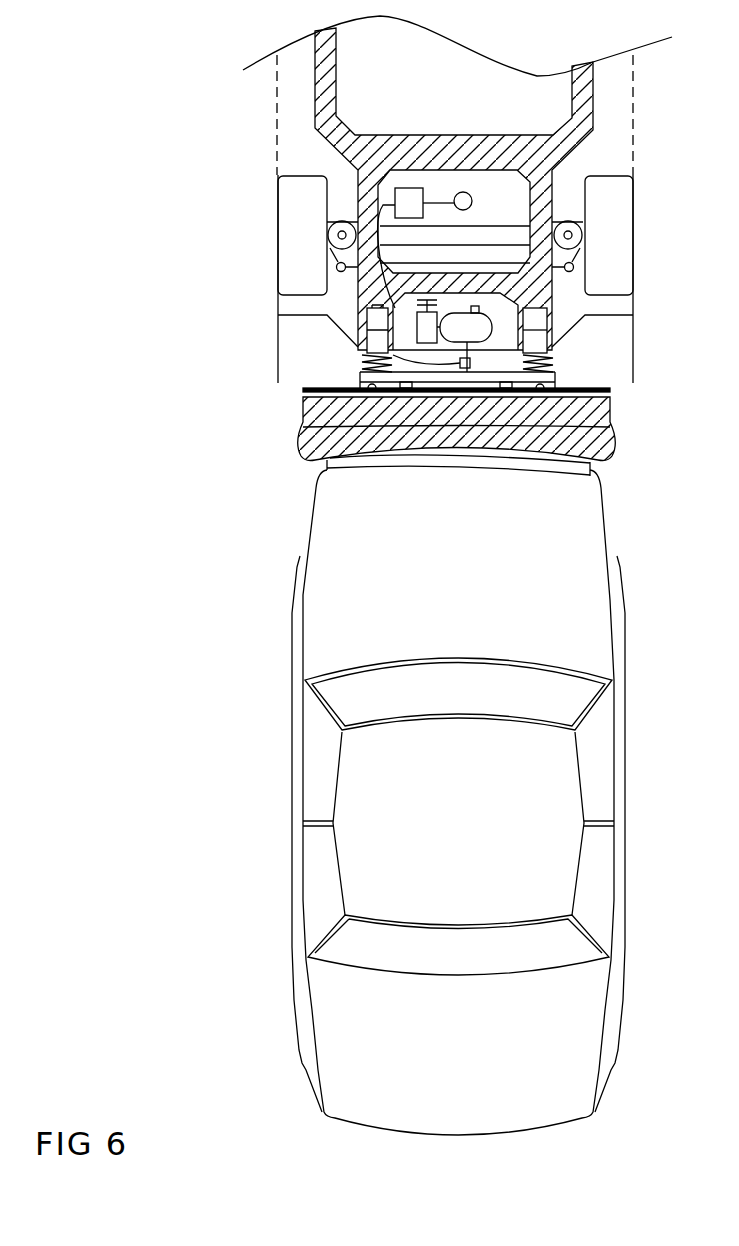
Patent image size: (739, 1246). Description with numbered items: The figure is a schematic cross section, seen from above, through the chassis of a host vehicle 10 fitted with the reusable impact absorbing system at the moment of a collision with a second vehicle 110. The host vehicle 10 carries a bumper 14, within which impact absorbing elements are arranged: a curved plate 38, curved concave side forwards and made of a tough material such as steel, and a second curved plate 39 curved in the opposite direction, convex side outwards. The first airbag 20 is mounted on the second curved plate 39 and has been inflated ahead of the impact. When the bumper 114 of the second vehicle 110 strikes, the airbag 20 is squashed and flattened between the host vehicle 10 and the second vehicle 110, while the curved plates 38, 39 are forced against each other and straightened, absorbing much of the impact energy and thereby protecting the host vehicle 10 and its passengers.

The host vehicle 10 is at (426, 202).
The bumper 14 is at (302, 377).
The curved plate 38 is at (476, 385).
The second curved plate 39 is at (332, 424).
The first airbag 20 is at (620, 450).
The bumper of second vehicle 114 is at (333, 466).
The second vehicle 110 is at (402, 795).